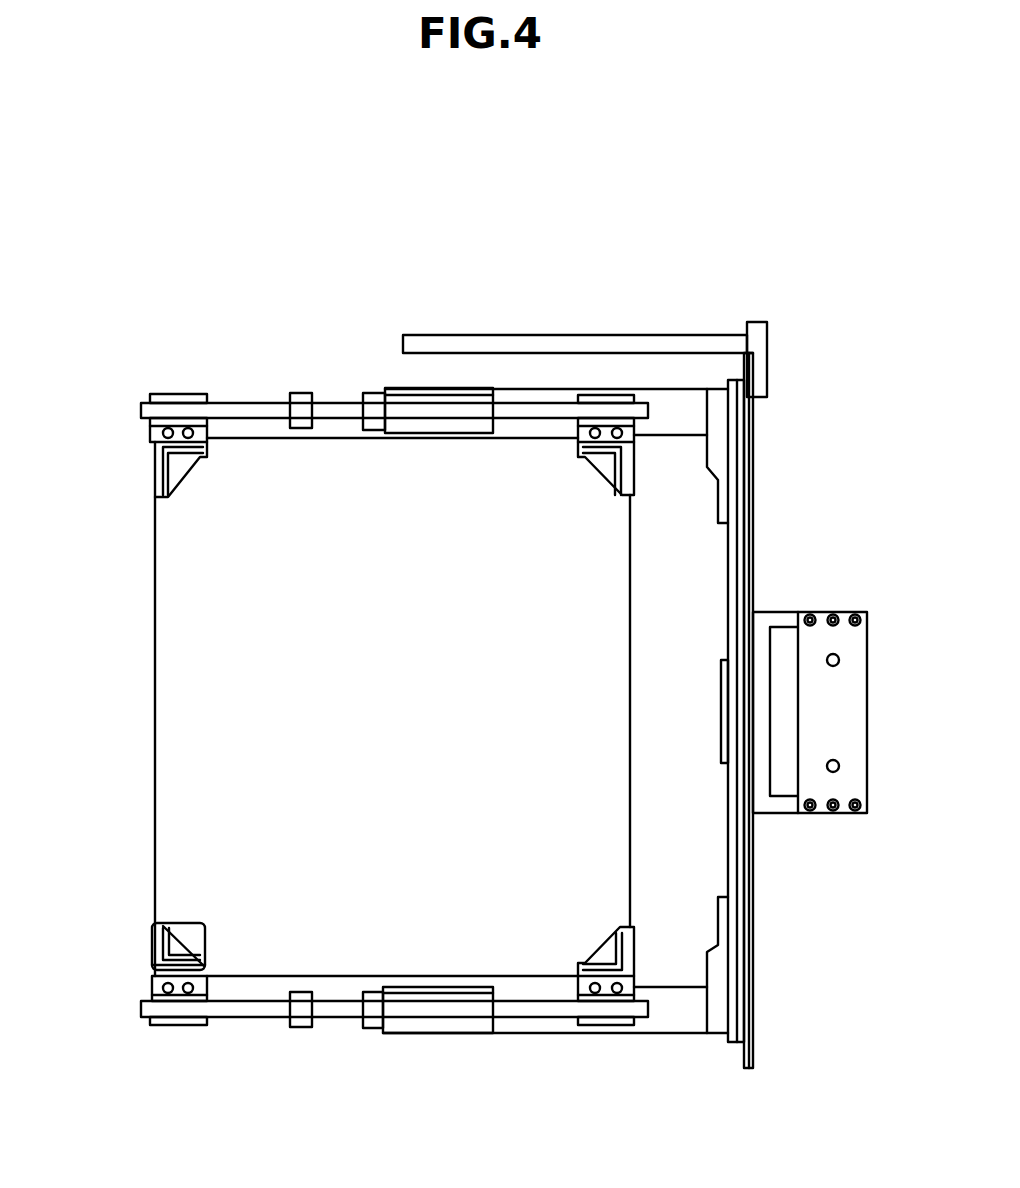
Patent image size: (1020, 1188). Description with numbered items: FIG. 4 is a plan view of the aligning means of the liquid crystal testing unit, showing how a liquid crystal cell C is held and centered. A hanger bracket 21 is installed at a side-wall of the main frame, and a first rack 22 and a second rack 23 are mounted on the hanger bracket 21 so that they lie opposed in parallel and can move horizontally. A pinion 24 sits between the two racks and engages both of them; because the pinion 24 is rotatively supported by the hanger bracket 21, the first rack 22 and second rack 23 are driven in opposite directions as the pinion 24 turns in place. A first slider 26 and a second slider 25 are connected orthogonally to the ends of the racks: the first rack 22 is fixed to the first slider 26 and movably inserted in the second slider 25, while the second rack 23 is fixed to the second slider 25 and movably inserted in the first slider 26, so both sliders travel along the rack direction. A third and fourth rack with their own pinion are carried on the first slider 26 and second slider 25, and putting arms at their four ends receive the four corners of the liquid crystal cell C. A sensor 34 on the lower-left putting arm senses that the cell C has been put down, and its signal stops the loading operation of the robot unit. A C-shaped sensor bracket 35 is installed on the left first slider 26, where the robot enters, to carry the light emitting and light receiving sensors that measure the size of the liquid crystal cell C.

The hanger bracket 21 is at (822, 800).
The first rack 22 is at (825, 695).
The second rack 23 is at (740, 556).
The pinion 24 is at (722, 711).
The second slider 25 is at (671, 1022).
The first slider 26 is at (668, 400).
The sensor 34 is at (192, 930).
The sensor bracket 35 is at (581, 340).
The liquid crystal cell C is at (406, 700).